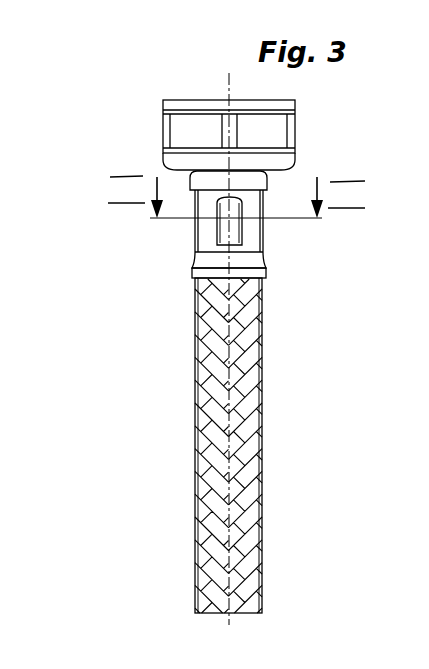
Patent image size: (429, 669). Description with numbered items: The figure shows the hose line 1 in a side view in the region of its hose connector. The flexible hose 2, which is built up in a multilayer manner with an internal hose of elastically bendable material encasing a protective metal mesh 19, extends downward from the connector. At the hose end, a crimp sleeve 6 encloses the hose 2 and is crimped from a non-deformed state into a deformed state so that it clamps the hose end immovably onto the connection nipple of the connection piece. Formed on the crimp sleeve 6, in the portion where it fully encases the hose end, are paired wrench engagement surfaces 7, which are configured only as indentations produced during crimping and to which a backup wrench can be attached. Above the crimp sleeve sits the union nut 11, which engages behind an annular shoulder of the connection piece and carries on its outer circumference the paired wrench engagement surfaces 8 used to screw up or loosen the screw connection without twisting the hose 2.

The hose line 1 is at (62, 283).
The flexible hose 2 is at (252, 443).
The crimp sleeve 6 is at (255, 238).
The wrench engagement surfaces 7 is at (218, 240).
The wrench engagement surfaces 8 is at (272, 138).
The union nut 11 is at (280, 162).
The protective metal mesh 19 is at (258, 517).